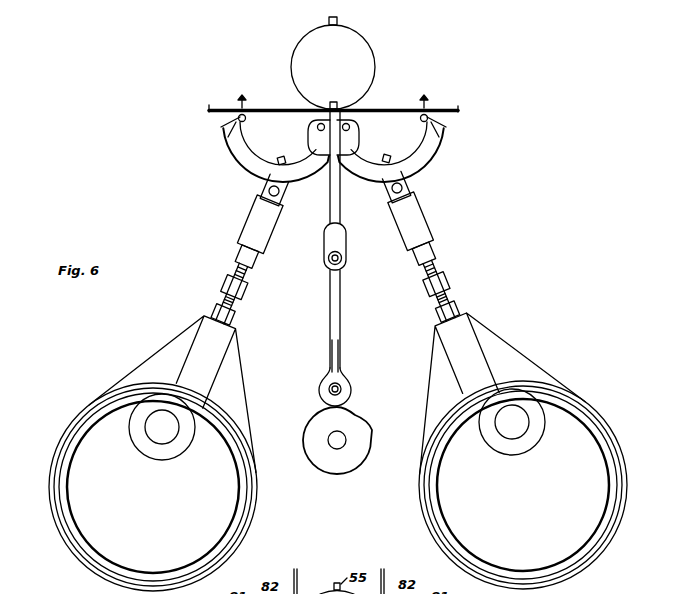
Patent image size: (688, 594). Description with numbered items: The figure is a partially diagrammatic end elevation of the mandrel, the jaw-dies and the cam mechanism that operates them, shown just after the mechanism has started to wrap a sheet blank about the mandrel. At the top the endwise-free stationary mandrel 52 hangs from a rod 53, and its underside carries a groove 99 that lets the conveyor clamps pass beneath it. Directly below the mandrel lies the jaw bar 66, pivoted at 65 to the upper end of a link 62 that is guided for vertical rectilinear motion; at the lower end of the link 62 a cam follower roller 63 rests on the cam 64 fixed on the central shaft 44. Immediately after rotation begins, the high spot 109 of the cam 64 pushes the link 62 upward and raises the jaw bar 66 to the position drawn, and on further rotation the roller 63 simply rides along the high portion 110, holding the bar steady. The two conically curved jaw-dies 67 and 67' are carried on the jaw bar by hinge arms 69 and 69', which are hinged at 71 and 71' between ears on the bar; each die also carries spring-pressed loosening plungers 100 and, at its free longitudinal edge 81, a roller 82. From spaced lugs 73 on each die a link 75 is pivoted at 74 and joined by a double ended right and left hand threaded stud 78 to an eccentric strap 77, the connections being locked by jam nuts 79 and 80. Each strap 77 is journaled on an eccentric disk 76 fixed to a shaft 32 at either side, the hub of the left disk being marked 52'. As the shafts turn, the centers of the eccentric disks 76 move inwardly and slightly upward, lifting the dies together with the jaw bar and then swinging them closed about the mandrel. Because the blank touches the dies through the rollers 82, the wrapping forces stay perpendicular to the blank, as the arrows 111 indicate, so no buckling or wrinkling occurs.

The mandrel 52 is at (333, 67).
The rods 53 is at (338, 20).
The groove 99 is at (337, 104).
The arrows 111 is at (333, 95).
The rollers 82 is at (246, 118).
The free longitudinal edges 81 is at (221, 128).
The jaw-die 67 is at (403, 152).
The jaw-die 67' is at (265, 152).
The hinge arm 69 is at (307, 137).
The hinge arm 69' is at (362, 137).
The pivot 71 is at (306, 122).
The pivot 71' is at (366, 122).
The loosening plungers 100 is at (280, 161).
The lugs 73 is at (258, 192).
The pivot 74 is at (280, 191).
The link 75 is at (266, 238).
The locking jam nut 80 is at (252, 263).
The double ended right and left hand threaded stud 78 is at (236, 303).
The locking jam nut 79 is at (437, 320).
The jaw bar 66 is at (341, 204).
The pivot 65 is at (347, 258).
The link 62 is at (341, 326).
The cam follower roller 63 is at (353, 390).
The high spot 109 is at (329, 410).
The cam 64 is at (358, 456).
The high portion 110 is at (304, 440).
The shaft 44 is at (336, 447).
The eccentric strap 77 is at (57, 459).
The eccentric disk 76 is at (338, 486).
The left wheel hub 52' is at (151, 434).
The shaft 32 is at (505, 433).